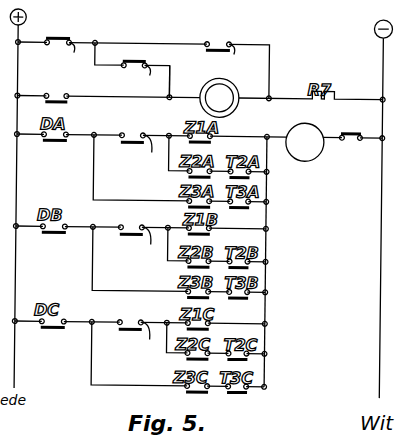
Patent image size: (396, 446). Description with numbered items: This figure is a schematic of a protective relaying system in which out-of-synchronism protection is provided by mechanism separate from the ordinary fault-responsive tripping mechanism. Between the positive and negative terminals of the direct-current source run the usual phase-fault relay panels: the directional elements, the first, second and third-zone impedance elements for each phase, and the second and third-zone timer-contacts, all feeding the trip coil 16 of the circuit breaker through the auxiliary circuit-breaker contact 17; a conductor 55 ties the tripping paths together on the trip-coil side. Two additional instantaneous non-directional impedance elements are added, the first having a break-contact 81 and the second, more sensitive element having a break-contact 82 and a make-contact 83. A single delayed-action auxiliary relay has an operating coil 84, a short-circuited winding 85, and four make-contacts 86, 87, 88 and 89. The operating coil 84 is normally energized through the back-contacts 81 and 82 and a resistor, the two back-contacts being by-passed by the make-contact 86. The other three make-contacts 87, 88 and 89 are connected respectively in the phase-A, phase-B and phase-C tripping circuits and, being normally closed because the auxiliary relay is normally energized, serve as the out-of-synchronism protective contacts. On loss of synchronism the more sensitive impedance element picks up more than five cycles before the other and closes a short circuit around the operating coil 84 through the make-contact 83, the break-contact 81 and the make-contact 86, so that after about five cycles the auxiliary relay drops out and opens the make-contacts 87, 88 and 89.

The trip coil 16 is at (304, 122).
The auxiliary circuit-breaker contact 17 is at (349, 132).
The conductor 55 is at (268, 186).
The break-contact 81 is at (57, 45).
The break-contact 82 is at (133, 68).
The make-contact 83 is at (230, 51).
The operating coil 84 is at (183, 82).
The short-circuited winding 85 is at (236, 106).
The make-contact 86 is at (67, 96).
The make-contact 87 is at (135, 139).
The make-contact 88 is at (134, 232).
The make-contact 89 is at (131, 327).